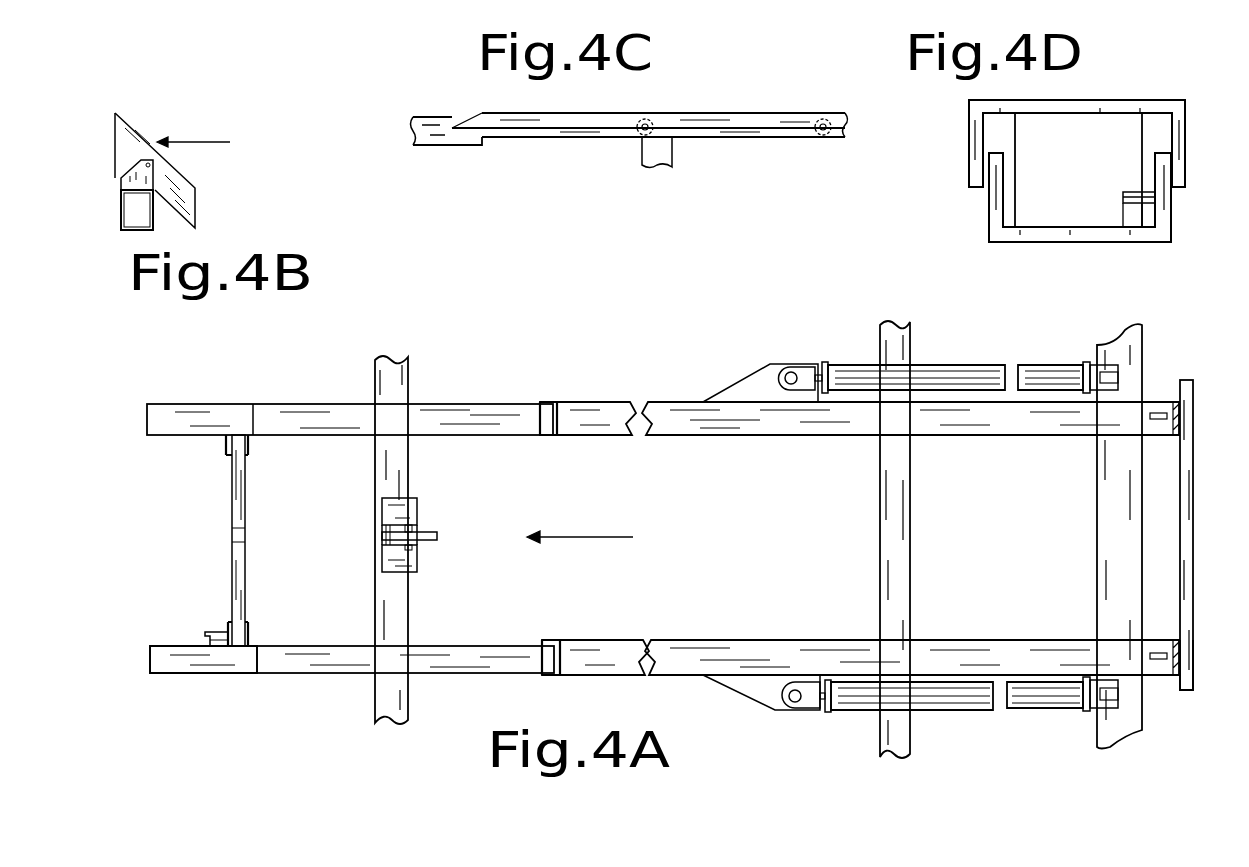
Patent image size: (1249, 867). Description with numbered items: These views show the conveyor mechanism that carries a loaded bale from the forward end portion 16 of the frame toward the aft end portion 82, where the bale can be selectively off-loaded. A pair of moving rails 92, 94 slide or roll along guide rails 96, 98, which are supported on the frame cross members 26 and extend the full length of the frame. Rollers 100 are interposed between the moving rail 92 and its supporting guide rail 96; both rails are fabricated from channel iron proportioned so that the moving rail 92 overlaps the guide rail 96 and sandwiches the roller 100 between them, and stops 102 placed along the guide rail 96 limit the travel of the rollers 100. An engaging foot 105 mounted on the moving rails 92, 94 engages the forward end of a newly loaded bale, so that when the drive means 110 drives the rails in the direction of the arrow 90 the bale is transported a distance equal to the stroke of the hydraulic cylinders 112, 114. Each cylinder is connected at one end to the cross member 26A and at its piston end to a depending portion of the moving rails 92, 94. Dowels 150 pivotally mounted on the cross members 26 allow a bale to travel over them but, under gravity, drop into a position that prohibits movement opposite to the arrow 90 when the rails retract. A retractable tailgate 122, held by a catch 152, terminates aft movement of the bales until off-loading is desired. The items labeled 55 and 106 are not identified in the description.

In FIG. 4A, the forward end portion 16 is at (1146, 357).
In FIG. 4A, the cross members 26 is at (398, 705).
In FIG. 4B, the cross members 26 is at (122, 207).
In FIG. 4A, the cross member 26A is at (1123, 723).
In FIG. 4A, the direction of pivoting 55 is at (866, 464).
In FIG. 4A, the aft end portion 82 is at (197, 687).
In FIG. 4A, the arrow 90 is at (567, 537).
In FIG. 4B, the arrow 90 is at (188, 143).
In FIG. 4A, the moving rail 92 is at (750, 428).
In FIG. 4C, the moving rail 92 is at (787, 117).
In FIG. 4D, the moving rail 92 is at (1077, 100).
In FIG. 4A, the moving rail 94 is at (717, 647).
In FIG. 4A, the guide rail 96 is at (470, 408).
In FIG. 4C, the guide rail 96 is at (442, 133).
In FIG. 4D, the guide rail 96 is at (1083, 237).
In FIG. 4A, the guide rail 98 is at (495, 652).
In FIG. 4C, the rollers 100 is at (822, 143).
In FIG. 4D, the stops 102 is at (1125, 203).
In FIG. 4A, the engaging foot 105 is at (1165, 398).
In FIG. 4A, the end plate lower portion 106 is at (1197, 690).
In FIG. 4A, the drive means 110 is at (942, 357).
In FIG. 4D, the drive means 110 is at (1087, 182).
In FIG. 4A, the hydraulic cylinder 112 is at (1033, 372).
In FIG. 4A, the hydraulic cylinder 114 is at (1048, 703).
In FIG. 4A, the tailgate 122 is at (235, 512).
In FIG. 4A, the dowels 150 is at (427, 520).
In FIG. 4B, the dowels 150 is at (120, 170).
In FIG. 4A, the catch 152 is at (212, 627).